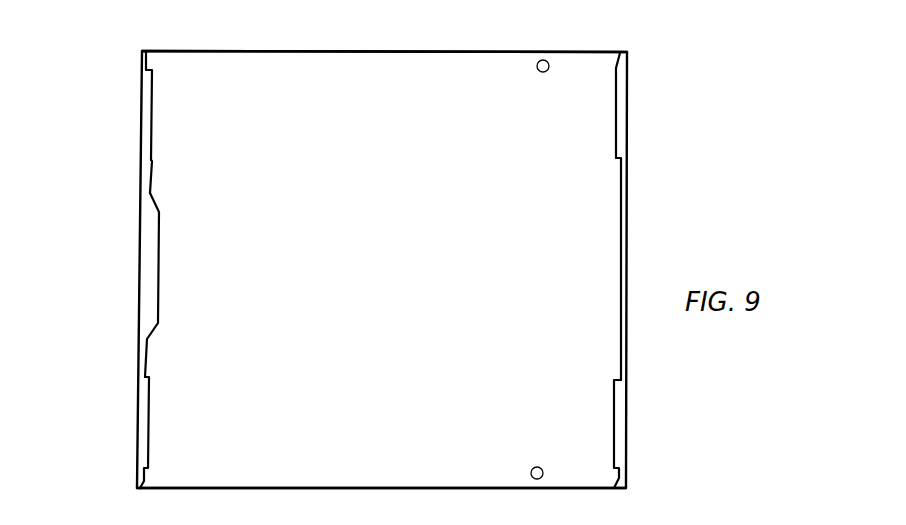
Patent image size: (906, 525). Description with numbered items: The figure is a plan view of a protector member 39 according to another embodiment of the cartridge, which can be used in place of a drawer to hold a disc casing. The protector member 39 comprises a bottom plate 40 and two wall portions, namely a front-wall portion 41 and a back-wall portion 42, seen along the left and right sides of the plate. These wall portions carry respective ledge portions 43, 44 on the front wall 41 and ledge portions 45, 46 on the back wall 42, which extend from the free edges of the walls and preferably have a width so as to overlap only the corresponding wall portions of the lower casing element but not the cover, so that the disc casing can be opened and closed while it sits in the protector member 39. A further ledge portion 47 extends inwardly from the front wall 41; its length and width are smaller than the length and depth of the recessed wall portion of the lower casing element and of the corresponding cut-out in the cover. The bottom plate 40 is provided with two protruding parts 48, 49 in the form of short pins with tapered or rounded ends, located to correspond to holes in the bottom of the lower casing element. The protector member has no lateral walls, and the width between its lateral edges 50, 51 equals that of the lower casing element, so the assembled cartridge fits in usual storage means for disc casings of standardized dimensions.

The protector member 39 is at (226, 51).
The bottom plate 40 is at (366, 297).
The front-wall portion 41 is at (147, 173).
The back-wall portion 42 is at (624, 214).
The ledge portion 43 is at (147, 118).
The ledge portion 44 is at (146, 429).
The ledge portion 45 is at (623, 119).
The ledge portion 46 is at (618, 421).
The ledge portion 47 is at (149, 282).
The protruding part 48 is at (542, 73).
The protruding part 49 is at (537, 467).
The lateral edge 50 is at (321, 52).
The lateral edge 51 is at (290, 487).